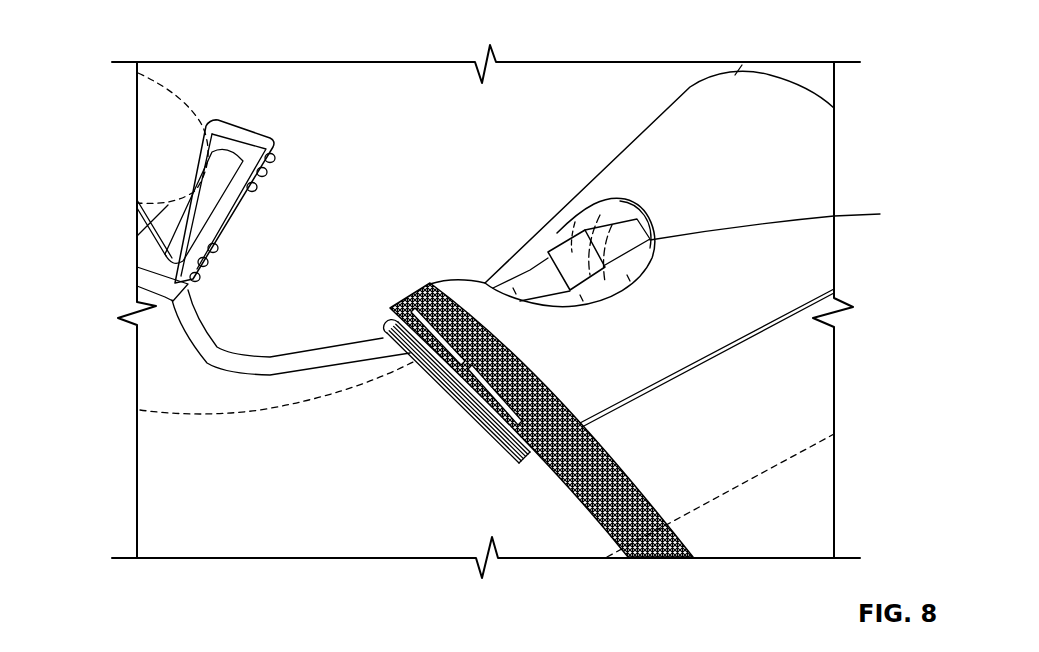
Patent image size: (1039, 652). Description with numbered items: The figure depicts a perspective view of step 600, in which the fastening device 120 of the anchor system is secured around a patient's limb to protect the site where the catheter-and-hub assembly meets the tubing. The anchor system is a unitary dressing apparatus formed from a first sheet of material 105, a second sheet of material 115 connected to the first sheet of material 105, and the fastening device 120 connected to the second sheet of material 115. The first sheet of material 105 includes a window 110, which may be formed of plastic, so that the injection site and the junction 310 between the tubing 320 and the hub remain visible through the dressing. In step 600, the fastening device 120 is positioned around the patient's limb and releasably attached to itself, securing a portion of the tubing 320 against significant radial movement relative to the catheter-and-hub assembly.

The step 600 is at (153, 41).
The first sheet of material 105 is at (670, 130).
The junction 310 is at (560, 247).
The window 110 is at (755, 314).
The second sheet of material 115 is at (382, 332).
The tubing 320 is at (340, 357).
The fastening device 120 is at (617, 513).